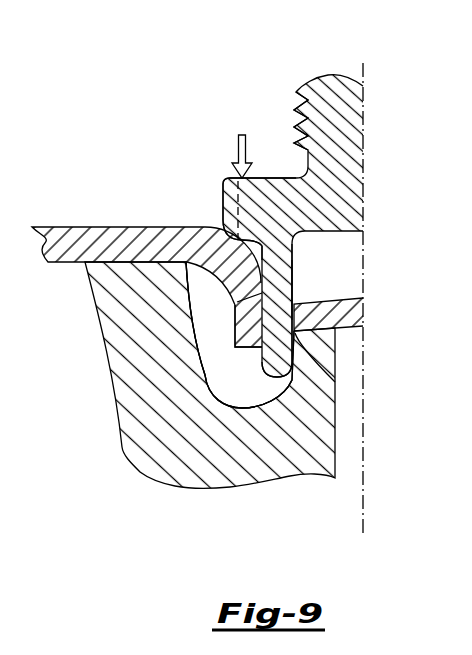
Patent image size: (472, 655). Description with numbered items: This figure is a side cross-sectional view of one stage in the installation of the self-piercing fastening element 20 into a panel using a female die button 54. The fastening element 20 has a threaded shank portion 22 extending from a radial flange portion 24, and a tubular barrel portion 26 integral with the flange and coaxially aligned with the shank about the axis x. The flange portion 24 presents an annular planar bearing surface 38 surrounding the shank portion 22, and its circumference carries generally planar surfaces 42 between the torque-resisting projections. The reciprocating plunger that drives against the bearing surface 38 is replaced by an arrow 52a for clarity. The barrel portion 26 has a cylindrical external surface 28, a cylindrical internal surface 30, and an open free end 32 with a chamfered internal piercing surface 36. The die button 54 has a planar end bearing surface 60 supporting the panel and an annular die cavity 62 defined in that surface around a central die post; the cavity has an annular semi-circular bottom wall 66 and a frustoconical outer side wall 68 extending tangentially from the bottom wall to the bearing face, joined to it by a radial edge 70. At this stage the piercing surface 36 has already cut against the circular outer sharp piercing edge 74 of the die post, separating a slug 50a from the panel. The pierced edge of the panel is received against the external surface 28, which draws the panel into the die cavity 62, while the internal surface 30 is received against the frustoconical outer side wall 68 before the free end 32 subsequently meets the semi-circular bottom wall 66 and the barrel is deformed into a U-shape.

The fastening element 20 is at (305, 82).
The shank portion 22 is at (353, 141).
The radial flange portion 24 is at (212, 195).
The barrel portion 26 is at (280, 255).
The cylindrical external surface 28 is at (293, 288).
The cylindrical internal surface 30 is at (293, 277).
The open free end 32 is at (268, 377).
The chamfered internal piercing surface 36 is at (288, 376).
The annular planar bearing surface 38 is at (268, 178).
The planar surfaces 42 is at (223, 180).
The slug 50a is at (351, 313).
The arrow 52a is at (244, 143).
The female die button 54 is at (178, 423).
The planar end bearing surface 60 is at (117, 258).
The annular die cavity 62 is at (235, 378).
The semi-circular bottom wall 66 is at (224, 405).
The frustoconical outer side wall 68 is at (196, 307).
The radial edge 70 is at (167, 267).
The circular outer sharp piercing edge 74 is at (335, 382).
The axis x is at (363, 183).